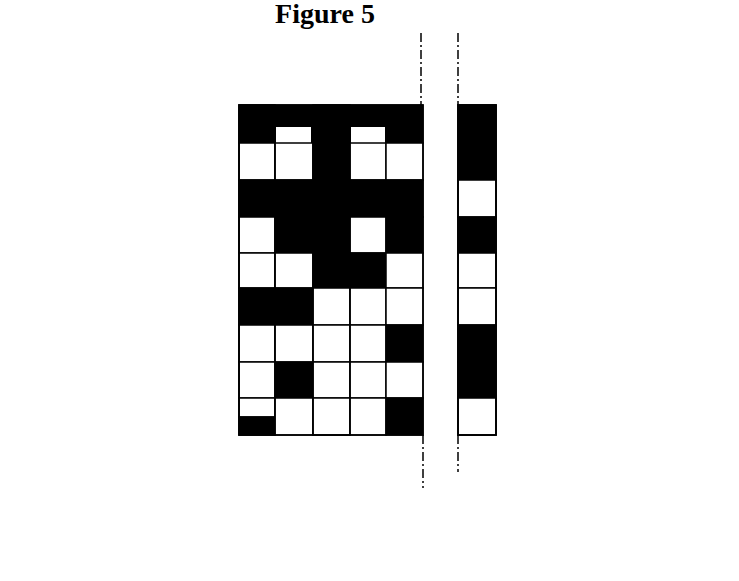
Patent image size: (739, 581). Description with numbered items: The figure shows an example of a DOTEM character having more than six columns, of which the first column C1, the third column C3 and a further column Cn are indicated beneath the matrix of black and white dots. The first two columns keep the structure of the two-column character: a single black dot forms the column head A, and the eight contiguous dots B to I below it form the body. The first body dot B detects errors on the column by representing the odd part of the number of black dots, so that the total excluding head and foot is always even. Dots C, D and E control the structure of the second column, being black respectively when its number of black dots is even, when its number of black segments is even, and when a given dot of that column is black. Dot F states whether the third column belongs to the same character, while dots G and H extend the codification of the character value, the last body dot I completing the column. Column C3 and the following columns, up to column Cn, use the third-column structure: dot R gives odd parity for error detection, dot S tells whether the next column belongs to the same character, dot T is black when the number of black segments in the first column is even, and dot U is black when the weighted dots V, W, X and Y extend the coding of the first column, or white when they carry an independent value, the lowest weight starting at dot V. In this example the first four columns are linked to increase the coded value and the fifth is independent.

The column head A is at (212, 103).
The first dot of the body B is at (230, 163).
The second dot C is at (239, 198).
The third dot D is at (230, 235).
The fourth dot E is at (239, 273).
The fifth dot F is at (230, 309).
The sixth dot G is at (239, 346).
The seventh dot H is at (230, 381).
The last dot of the body I is at (239, 416).
The first dot of the third column R is at (505, 162).
The link dot S is at (496, 197).
The segment-parity dot T is at (505, 233).
The extension dot U is at (496, 270).
The fifth dot of the third column V is at (505, 307).
The sixth dot of the third column W is at (496, 342).
The seventh dot of the third column X is at (505, 378).
The eighth dot of the third column Y is at (496, 413).
The first column C1 is at (255, 472).
The third column C3 is at (328, 472).
The n-th column Cn is at (475, 472).